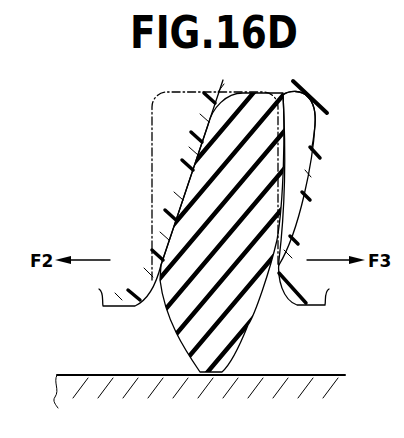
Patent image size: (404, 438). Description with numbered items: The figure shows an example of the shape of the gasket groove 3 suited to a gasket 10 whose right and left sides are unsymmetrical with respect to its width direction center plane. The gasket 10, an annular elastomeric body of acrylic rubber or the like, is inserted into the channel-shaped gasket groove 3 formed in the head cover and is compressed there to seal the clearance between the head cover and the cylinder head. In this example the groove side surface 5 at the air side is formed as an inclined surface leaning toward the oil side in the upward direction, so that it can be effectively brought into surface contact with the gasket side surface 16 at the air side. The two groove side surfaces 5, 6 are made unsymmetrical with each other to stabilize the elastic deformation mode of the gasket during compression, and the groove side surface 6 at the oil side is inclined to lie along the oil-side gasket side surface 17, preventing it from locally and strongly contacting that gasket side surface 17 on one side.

The gasket groove 3 is at (300, 121).
The groove side surface 5 is at (206, 148).
The groove side surface 6 is at (308, 168).
The gasket 10 is at (235, 322).
The gasket side surface 16 is at (162, 227).
The gasket side surface 17 is at (297, 215).